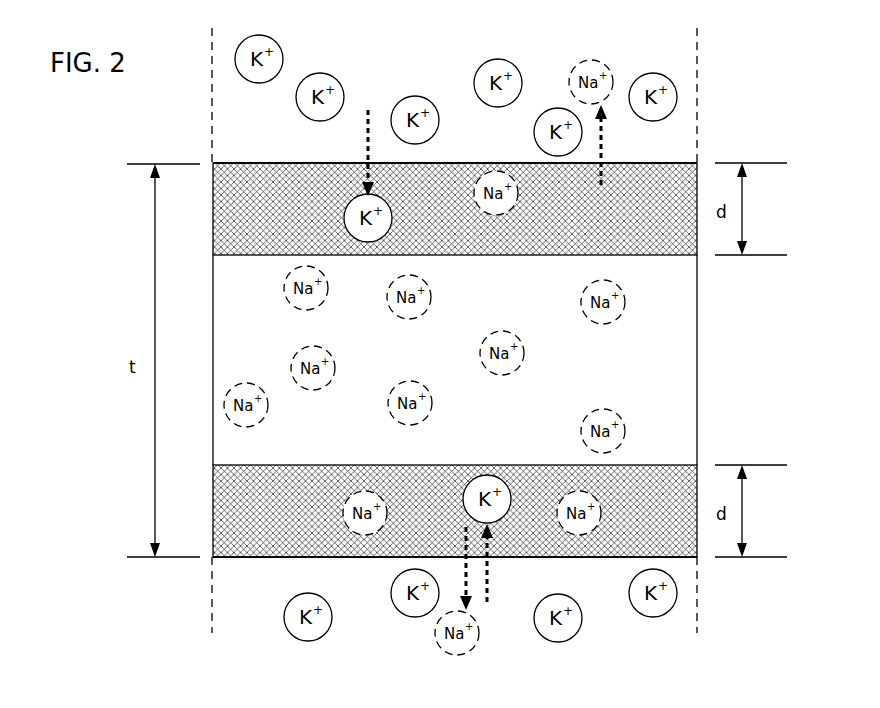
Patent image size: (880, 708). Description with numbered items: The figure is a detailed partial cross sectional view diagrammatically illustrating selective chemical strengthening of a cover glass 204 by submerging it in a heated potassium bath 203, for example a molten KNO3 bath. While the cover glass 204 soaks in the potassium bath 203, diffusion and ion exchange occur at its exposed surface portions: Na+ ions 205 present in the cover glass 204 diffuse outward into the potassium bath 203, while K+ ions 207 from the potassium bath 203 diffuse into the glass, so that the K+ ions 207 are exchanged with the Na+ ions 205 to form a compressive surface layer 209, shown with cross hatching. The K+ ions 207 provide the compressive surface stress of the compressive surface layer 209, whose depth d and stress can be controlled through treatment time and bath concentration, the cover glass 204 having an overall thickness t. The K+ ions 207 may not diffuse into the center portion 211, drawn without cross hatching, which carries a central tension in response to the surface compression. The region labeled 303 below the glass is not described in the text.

The potassium bath 203 is at (483, 143).
The cover glass 204 is at (232, 158).
The Na+ ions 205 is at (582, 63).
The K+ ions 207 is at (320, 73).
The compressive surface layer 209 is at (444, 234).
The center portion 211 is at (228, 302).
The external environment below glass 303 is at (386, 645).